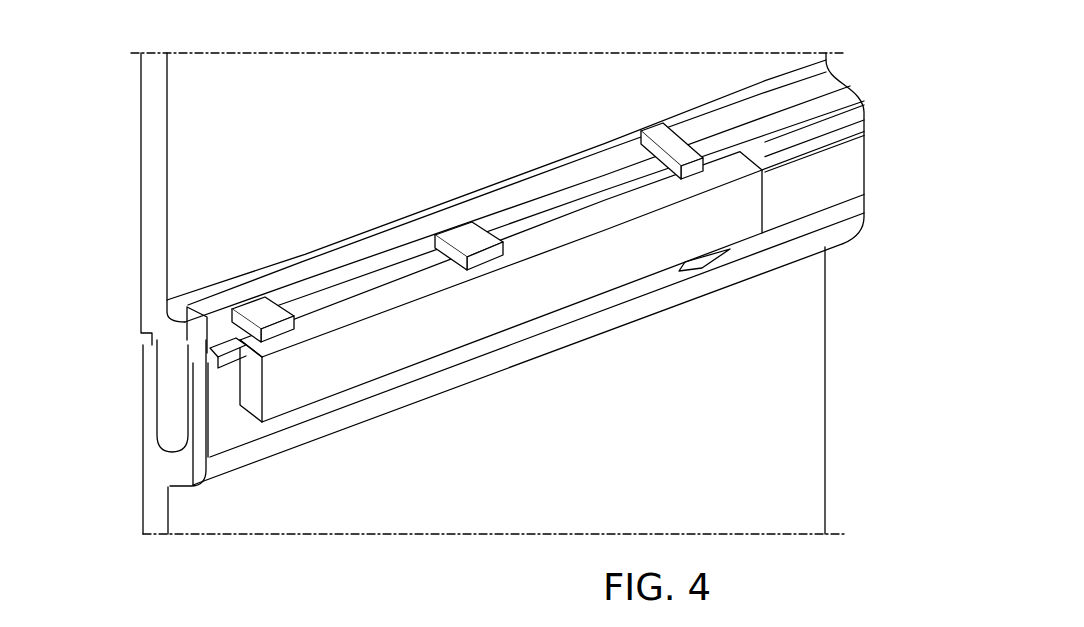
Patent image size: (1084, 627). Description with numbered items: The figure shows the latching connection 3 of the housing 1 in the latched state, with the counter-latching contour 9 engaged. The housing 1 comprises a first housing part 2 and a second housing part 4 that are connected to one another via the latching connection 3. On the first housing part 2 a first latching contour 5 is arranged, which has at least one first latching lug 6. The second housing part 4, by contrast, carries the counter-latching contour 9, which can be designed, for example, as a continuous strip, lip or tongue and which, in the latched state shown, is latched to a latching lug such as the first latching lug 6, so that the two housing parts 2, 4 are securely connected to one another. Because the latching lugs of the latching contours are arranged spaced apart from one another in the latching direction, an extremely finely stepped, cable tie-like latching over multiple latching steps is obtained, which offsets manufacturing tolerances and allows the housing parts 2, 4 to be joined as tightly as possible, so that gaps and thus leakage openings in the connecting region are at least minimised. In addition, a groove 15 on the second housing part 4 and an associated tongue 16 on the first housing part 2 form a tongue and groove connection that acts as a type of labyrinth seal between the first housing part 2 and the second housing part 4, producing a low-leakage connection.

The housing 1 is at (110, 138).
The first housing part 2 is at (362, 131).
The latching connection 3 is at (865, 92).
The second housing part 4 is at (668, 446).
The first latching contour 5 is at (223, 358).
The first latching lug 6 is at (192, 406).
The counter-latching contour 9 is at (557, 212).
The groove 15 is at (177, 452).
The tongue 16 is at (177, 427).